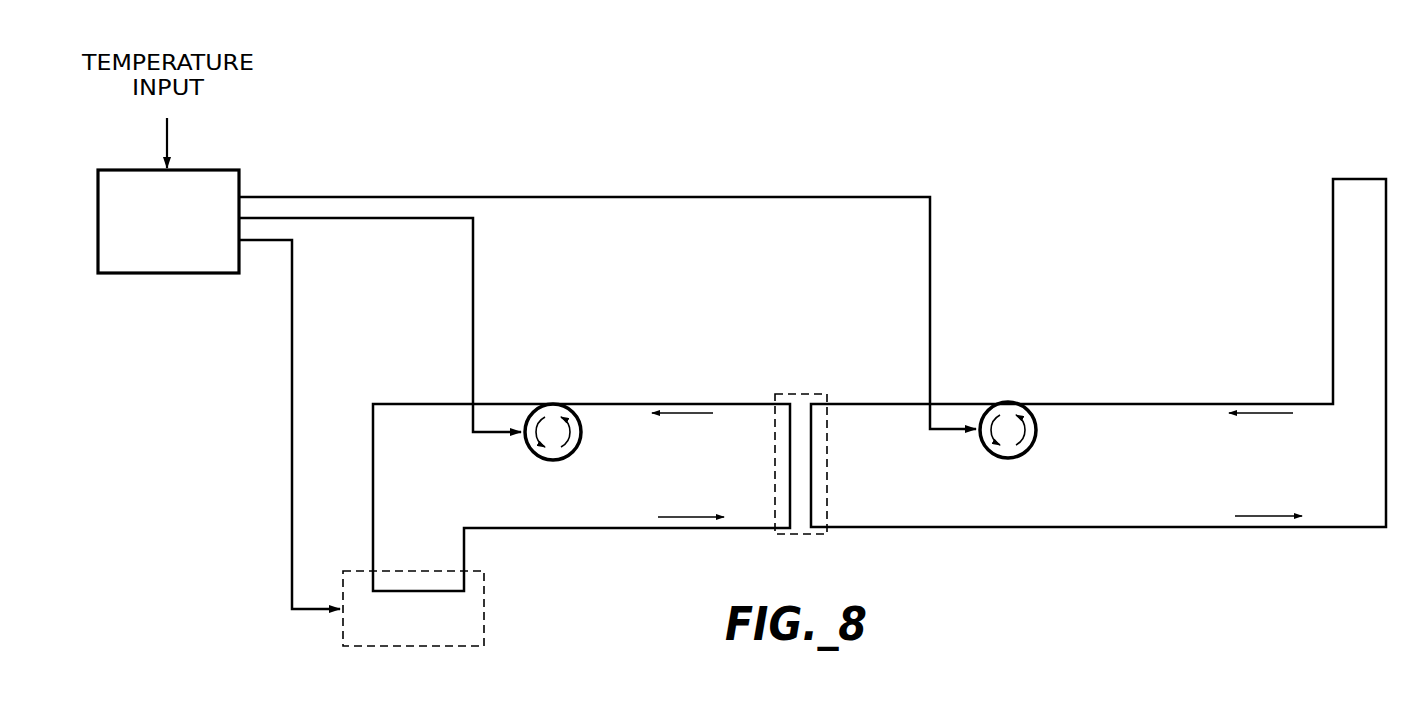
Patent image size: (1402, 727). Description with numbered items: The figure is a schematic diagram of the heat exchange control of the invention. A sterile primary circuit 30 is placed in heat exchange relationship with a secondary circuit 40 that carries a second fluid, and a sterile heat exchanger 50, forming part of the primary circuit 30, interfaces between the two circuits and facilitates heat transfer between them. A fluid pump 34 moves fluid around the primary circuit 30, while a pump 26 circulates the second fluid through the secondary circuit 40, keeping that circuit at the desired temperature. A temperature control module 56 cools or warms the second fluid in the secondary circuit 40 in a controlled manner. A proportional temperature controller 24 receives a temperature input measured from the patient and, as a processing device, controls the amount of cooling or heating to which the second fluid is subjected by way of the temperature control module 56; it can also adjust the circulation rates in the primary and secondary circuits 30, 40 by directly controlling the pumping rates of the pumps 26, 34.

The proportional temperature controller 24 is at (167, 275).
The pump 26 is at (582, 437).
The primary circuit 30 is at (965, 528).
The fluid pump 34 is at (1038, 432).
The secondary circuit 40 is at (603, 530).
The sterile heat exchanger 50 is at (792, 536).
The temperature control module 56 is at (485, 621).